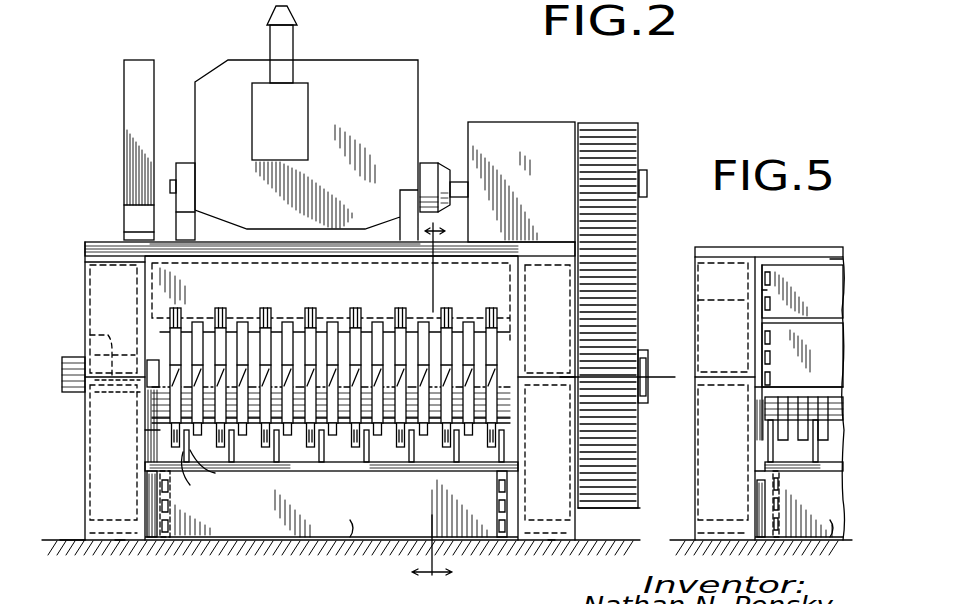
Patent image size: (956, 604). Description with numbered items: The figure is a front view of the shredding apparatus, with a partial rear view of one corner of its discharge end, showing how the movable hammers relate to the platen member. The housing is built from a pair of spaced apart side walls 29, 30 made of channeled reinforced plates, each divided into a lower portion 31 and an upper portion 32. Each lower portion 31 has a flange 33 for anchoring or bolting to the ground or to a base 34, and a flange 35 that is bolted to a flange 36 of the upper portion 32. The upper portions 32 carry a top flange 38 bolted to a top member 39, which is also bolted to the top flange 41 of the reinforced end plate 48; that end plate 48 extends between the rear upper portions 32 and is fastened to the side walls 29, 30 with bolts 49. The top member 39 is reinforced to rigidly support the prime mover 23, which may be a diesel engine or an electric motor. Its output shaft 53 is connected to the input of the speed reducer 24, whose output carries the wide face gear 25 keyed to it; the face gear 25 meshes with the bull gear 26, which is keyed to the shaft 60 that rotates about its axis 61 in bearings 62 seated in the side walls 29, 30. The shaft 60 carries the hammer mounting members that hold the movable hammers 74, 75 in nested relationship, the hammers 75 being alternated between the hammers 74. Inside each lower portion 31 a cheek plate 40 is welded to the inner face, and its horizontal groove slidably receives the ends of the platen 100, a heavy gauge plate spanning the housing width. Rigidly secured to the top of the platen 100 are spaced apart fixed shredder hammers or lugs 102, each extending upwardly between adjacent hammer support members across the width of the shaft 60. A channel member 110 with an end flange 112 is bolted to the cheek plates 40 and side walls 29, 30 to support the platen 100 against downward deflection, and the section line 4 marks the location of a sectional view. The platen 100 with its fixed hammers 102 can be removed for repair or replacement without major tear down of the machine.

In FIG. 2, the section line 4- 4 is at (432, 408).
In FIG. 2, the prime mover 23 is at (393, 77).
In FIG. 2, the speed reducer 24 is at (512, 133).
In FIG. 2, the wide face gear 25 is at (640, 128).
In FIG. 2, the bull gear 26 is at (636, 508).
In FIG. 2, the side wall 29 is at (145, 441).
In FIG. 2, the side wall 30 is at (508, 292).
In FIG. 5, the side wall 30 is at (698, 276).
In FIG. 2, the lower portion 31 is at (95, 480).
In FIG. 5, the lower portion 31 is at (700, 464).
In FIG. 2, the upper portion 32 is at (118, 303).
In FIG. 5, the upper portion 32 is at (700, 301).
In FIG. 2, the flange 33 is at (120, 550).
In FIG. 2, the base 34 is at (62, 540).
In FIG. 2, the flange 35 is at (112, 385).
In FIG. 2, the flange 36 is at (90, 327).
In FIG. 2, the top flange 38 is at (88, 264).
In FIG. 2, the top member 39 is at (96, 242).
In FIG. 5, the top member 39 is at (727, 237).
In FIG. 2, the cheek plate 40 is at (148, 448).
In FIG. 5, the cheek plate 40 is at (762, 485).
In FIG. 5, the top flange 41 is at (818, 262).
In FIG. 2, the reinforced end plate 48 is at (282, 295).
In FIG. 5, the reinforced end plate 48 is at (788, 272).
In FIG. 5, the bolts 49 is at (769, 270).
In FIG. 2, the output shaft 53 is at (461, 182).
In FIG. 2, the shaft 60 is at (650, 392).
In FIG. 2, the shaft axis 61 is at (650, 375).
In FIG. 2, the bearings 62 is at (644, 352).
In FIG. 2, the hammer 74 is at (182, 470).
In FIG. 5, the hammer 74 is at (782, 397).
In FIG. 2, the hammer 75 is at (215, 465).
In FIG. 2, the platen 100 is at (422, 466).
In FIG. 5, the platen 100 is at (828, 468).
In FIG. 2, the fixed shredder hammers 102 is at (210, 465).
In FIG. 5, the fixed shredder hammers 102 is at (768, 445).
In FIG. 2, the channel member 110 is at (350, 548).
In FIG. 5, the channel member 110 is at (828, 548).
In FIG. 2, the end flange 112 is at (158, 542).
In FIG. 5, the end flange 112 is at (775, 508).